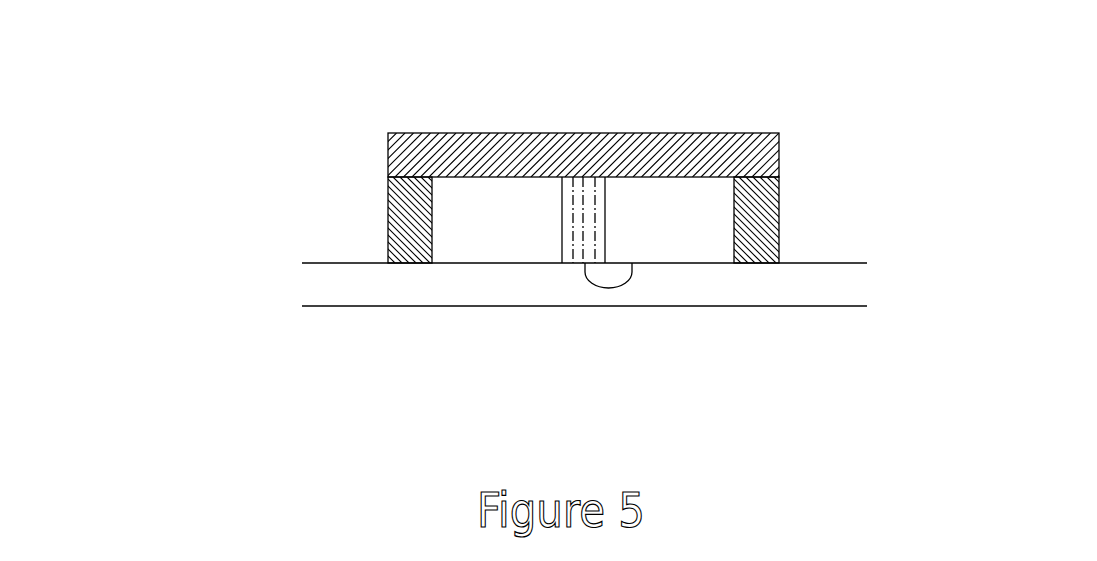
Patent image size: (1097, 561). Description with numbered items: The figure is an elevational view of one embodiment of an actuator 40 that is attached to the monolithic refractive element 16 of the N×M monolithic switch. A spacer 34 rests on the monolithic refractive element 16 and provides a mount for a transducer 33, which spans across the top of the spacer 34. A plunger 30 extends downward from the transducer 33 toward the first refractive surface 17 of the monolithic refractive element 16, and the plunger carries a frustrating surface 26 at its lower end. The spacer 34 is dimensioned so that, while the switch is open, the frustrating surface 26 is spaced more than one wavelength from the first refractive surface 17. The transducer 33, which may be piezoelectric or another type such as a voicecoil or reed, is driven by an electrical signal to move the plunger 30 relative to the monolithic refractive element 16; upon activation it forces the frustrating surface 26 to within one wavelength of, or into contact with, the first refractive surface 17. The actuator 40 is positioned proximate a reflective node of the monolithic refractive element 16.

The monolithic refractive element 16 is at (715, 285).
The first refractive surface 17 is at (660, 263).
The frustrating surface 26 is at (632, 263).
The plunger 30 is at (570, 228).
The transducer 33 is at (533, 145).
The spacer 34 is at (403, 222).
The actuator 40 is at (795, 79).